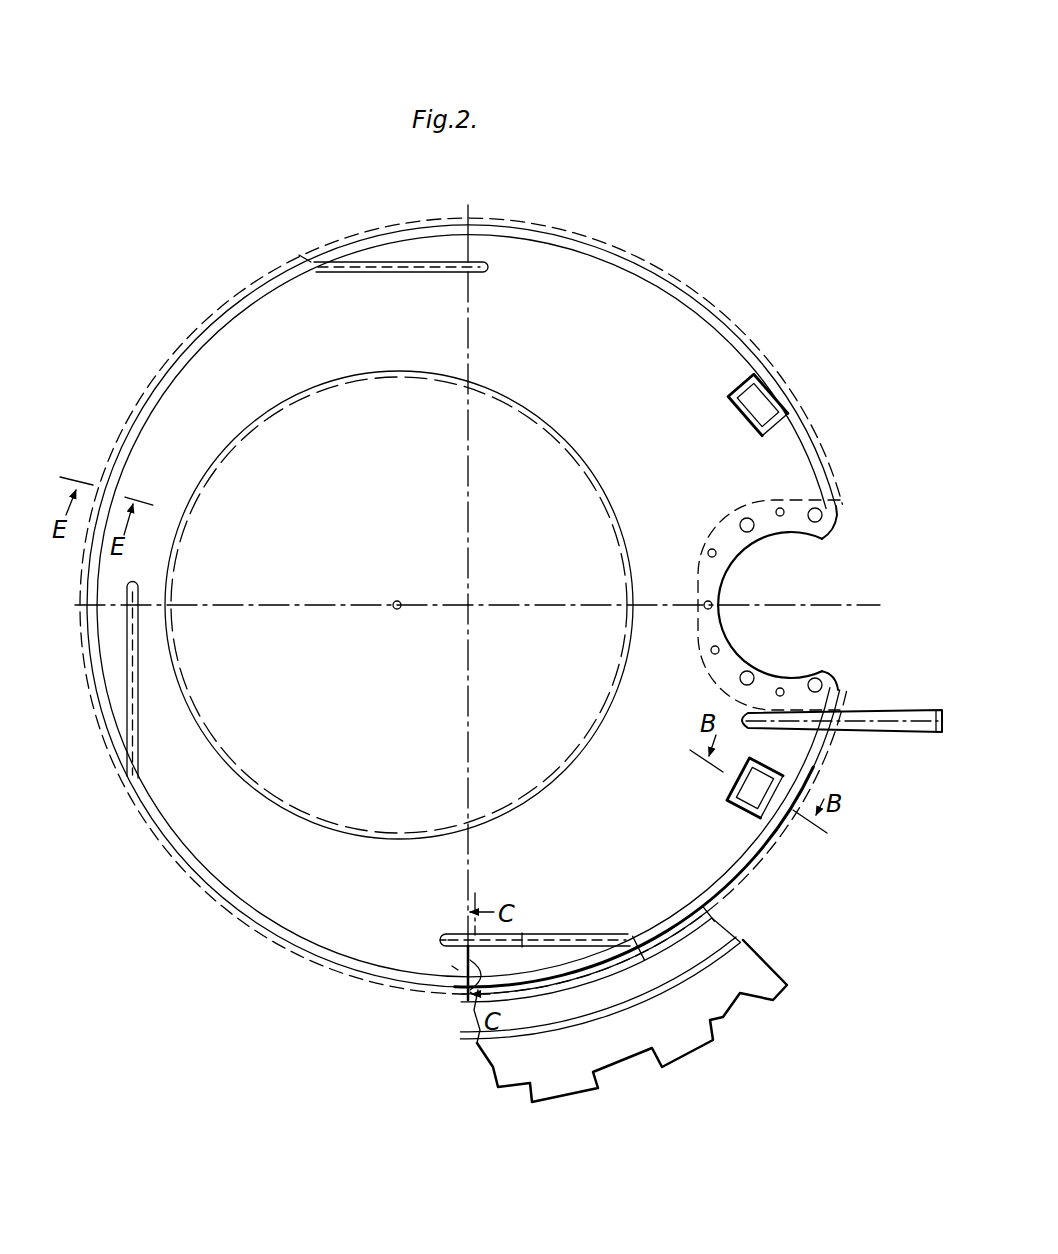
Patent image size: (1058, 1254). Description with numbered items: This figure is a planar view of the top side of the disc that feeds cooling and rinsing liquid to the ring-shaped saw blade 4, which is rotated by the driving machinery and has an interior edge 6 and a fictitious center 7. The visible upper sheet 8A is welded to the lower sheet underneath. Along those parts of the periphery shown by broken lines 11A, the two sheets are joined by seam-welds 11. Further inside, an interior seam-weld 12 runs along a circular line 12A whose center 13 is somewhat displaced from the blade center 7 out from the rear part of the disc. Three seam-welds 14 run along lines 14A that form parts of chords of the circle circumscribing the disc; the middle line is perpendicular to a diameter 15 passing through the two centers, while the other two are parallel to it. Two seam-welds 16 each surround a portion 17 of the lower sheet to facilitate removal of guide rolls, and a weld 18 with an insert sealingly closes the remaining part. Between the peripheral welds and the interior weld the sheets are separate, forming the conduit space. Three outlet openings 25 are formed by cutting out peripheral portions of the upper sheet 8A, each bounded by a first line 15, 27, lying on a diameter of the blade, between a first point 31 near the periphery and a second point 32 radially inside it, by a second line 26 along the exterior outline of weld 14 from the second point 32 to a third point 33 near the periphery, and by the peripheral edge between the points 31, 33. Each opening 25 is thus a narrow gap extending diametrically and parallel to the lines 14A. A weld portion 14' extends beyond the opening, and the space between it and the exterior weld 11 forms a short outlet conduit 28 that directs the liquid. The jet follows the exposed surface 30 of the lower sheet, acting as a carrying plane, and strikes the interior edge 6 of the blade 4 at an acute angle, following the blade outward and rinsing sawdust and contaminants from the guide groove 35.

The ring-shaped saw blade 4 is at (735, 1000).
The interior edge of saw blade 6 is at (690, 925).
The fictitious center of saw blade 7 is at (474, 612).
The upper sheet 8A is at (558, 338).
The seam-welds 11 is at (197, 336).
The broken lines 11A is at (716, 312).
The seam-weld 12 is at (238, 445).
The circular line 12A is at (268, 410).
The center of circular line 13 is at (396, 610).
The seam-welds 14 is at (308, 597).
The lines 14A is at (409, 274).
The weld portion 14' is at (511, 911).
The diameter of disc 15 is at (255, 612).
The seam-welds 16 is at (748, 447).
The portion of lower sheet 17 is at (762, 395).
The weld 18 is at (765, 532).
The outlet openings 25 is at (462, 245).
The second line 26 is at (522, 935).
The first line 27 is at (466, 788).
The outlet conduit 28 is at (455, 968).
The surface 30 is at (500, 1030).
The first point 31 is at (470, 992).
The second point 32 is at (440, 943).
The third point 33 is at (665, 958).
The guide groove 35 is at (745, 942).